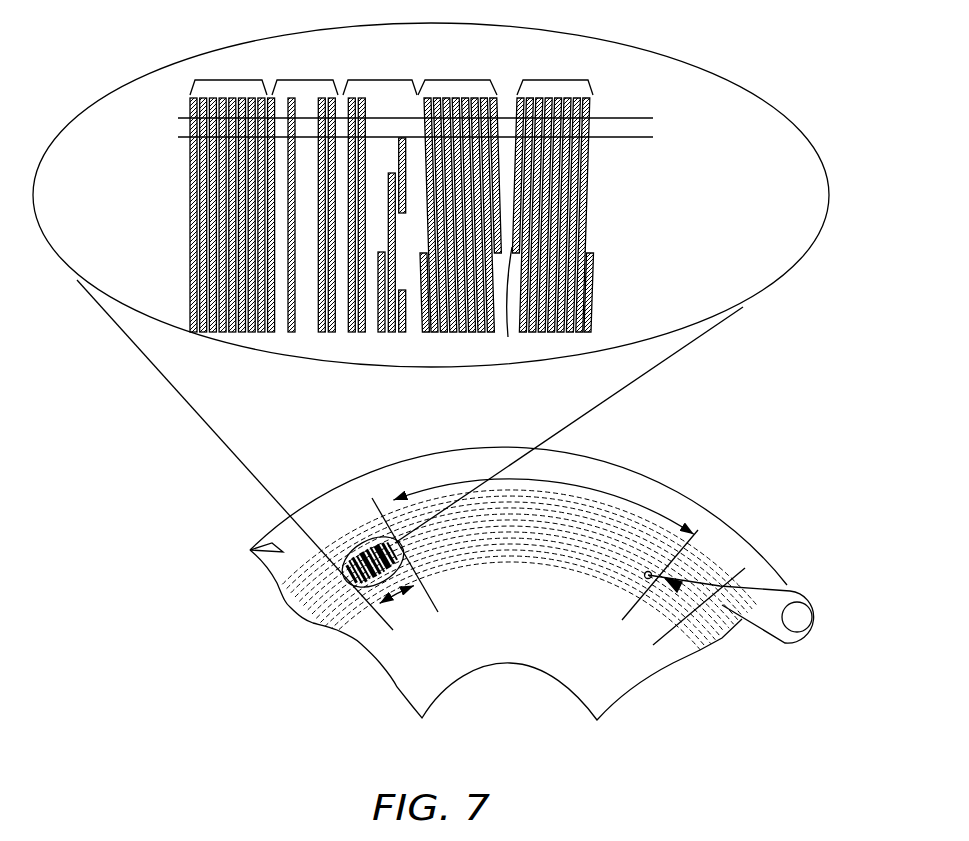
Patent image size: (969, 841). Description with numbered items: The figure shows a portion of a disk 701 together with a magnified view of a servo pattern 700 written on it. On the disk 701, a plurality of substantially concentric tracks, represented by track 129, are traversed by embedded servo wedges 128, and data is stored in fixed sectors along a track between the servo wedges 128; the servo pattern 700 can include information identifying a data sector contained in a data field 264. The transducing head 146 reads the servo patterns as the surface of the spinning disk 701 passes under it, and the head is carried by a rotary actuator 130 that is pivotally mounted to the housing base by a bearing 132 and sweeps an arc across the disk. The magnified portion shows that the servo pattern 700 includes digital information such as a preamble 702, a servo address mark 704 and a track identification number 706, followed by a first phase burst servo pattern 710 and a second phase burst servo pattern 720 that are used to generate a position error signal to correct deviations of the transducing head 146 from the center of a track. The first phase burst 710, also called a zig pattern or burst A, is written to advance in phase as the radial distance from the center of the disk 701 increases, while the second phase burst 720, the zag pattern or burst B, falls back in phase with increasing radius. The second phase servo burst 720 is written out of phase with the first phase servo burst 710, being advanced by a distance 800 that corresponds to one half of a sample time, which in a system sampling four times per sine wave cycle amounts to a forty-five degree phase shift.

The servo pattern 700 is at (664, 52).
The disk 701 is at (250, 550).
The preamble 702 is at (190, 95).
The servo address mark (SAM) 704 is at (320, 74).
The track number field 706 is at (398, 74).
The first phase burst servo pattern 710 is at (478, 74).
The second phase burst servo pattern 720 is at (576, 74).
The distance 800 is at (511, 306).
The data field 264 is at (447, 486).
The track 129 is at (590, 504).
The servo wedge 128 is at (405, 610).
The transducing head 146 is at (648, 571).
The rotary actuator 130 is at (752, 628).
The bearing 132 is at (803, 602).